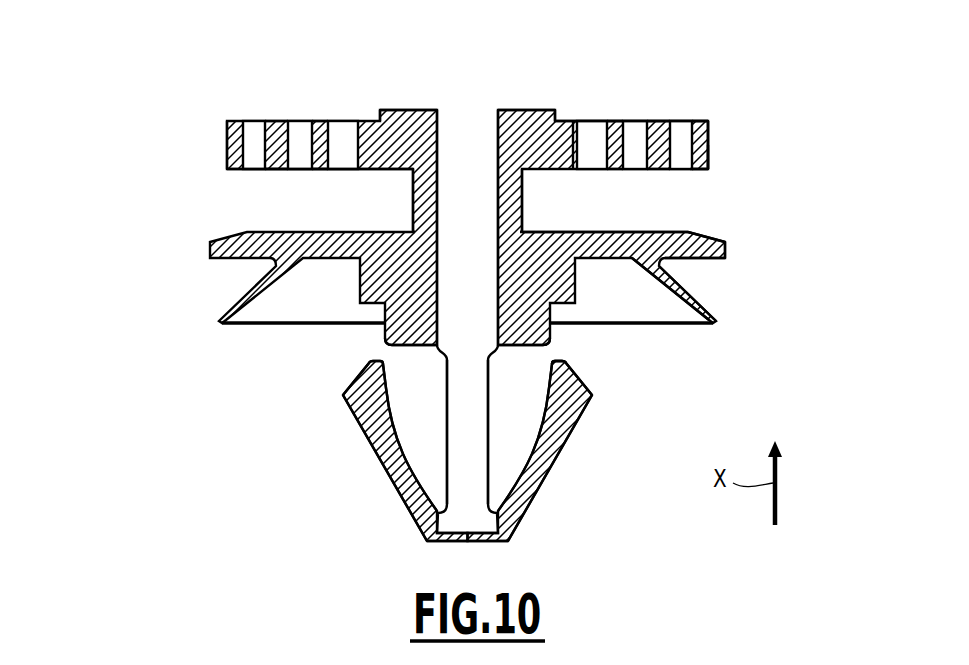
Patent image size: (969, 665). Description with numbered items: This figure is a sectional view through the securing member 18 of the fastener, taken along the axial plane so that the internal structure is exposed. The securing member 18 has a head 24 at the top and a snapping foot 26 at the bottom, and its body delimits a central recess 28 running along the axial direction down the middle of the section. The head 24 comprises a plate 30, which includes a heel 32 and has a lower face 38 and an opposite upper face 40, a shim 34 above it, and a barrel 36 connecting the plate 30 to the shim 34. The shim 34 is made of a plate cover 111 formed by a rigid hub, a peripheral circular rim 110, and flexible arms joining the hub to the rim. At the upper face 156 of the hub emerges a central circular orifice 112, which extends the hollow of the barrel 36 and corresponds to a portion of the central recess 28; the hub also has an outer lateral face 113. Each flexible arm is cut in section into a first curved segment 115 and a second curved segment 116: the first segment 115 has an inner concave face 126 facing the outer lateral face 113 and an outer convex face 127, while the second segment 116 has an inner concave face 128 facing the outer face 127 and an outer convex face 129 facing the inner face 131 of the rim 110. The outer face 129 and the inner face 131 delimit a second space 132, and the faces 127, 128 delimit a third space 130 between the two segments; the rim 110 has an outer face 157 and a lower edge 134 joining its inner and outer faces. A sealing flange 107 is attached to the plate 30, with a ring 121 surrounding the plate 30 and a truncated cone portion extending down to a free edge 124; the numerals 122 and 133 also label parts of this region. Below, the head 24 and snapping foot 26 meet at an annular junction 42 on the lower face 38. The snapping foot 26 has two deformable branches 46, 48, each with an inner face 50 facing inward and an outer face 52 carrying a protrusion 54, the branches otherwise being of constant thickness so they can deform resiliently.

The securing member 18 is at (168, 112).
The head 24 is at (214, 195).
The snapping foot 26 is at (264, 462).
The central recess 28 is at (462, 435).
The plate 30 is at (694, 262).
The heel 32 is at (528, 342).
The shim 34 is at (699, 120).
The barrel 36 is at (413, 196).
The lower face 38 is at (400, 345).
The upper face 40 is at (558, 232).
The junction 42 is at (555, 370).
The deformable branch 46 is at (370, 447).
The deformable branch 48 is at (567, 448).
The inner face 50 is at (518, 468).
The outer face 52 is at (395, 485).
The protrusion 54 is at (350, 410).
The sealing flange 107 is at (699, 300).
The rim 110 is at (710, 135).
The plate cover 111 is at (417, 120).
The central circular orifice 112 is at (465, 128).
The outer lateral face 113 is at (589, 133).
The first curved segment 115 is at (320, 170).
The second curved segment 116 is at (273, 170).
The ring 121 is at (725, 249).
The thin web 122 is at (612, 262).
The free edge 124 is at (712, 322).
The inner concave face 126 is at (606, 150).
The outer convex face 127 is at (636, 133).
The inner concave face 128 is at (645, 147).
The outer convex face 129 is at (677, 133).
The third space 130 is at (300, 128).
The inner face 131 is at (690, 145).
The second space 132 is at (252, 128).
The groove 133 is at (348, 128).
The lower edge 134 is at (703, 170).
The upper face 156 is at (531, 110).
The outer face 157 is at (712, 157).